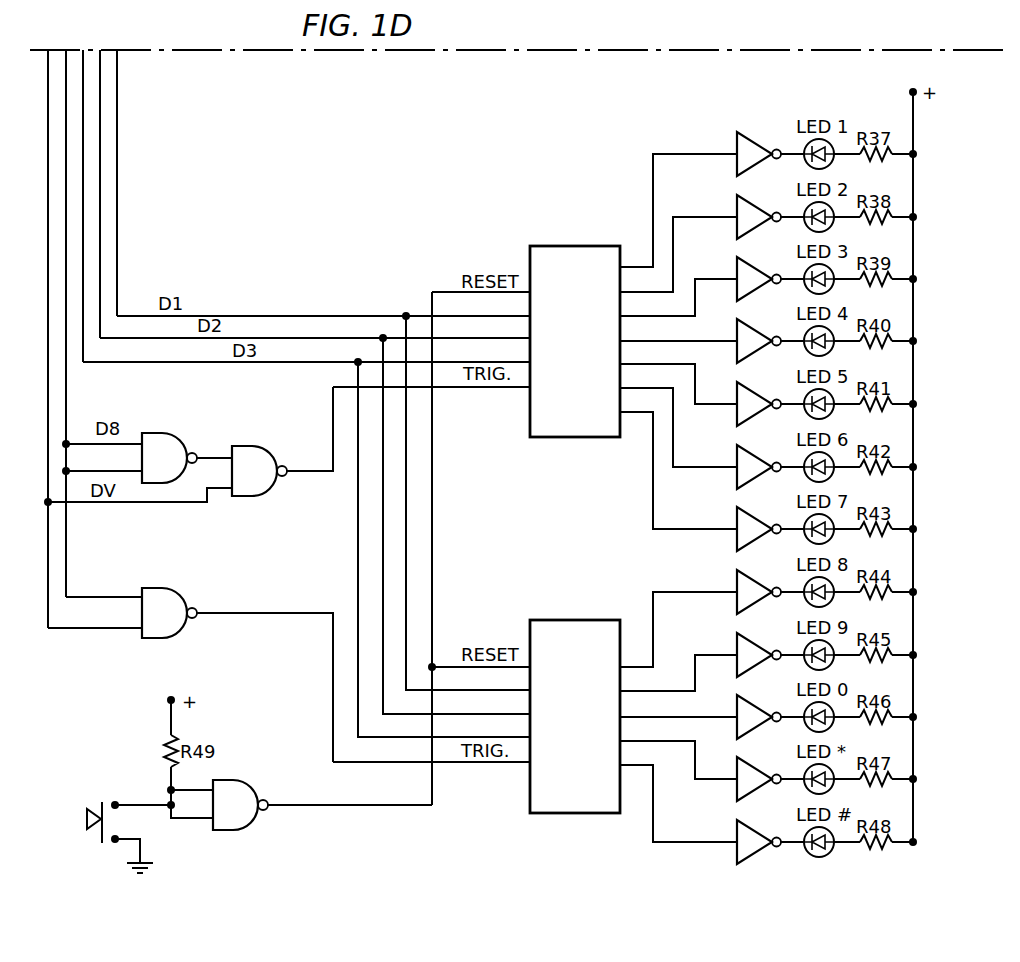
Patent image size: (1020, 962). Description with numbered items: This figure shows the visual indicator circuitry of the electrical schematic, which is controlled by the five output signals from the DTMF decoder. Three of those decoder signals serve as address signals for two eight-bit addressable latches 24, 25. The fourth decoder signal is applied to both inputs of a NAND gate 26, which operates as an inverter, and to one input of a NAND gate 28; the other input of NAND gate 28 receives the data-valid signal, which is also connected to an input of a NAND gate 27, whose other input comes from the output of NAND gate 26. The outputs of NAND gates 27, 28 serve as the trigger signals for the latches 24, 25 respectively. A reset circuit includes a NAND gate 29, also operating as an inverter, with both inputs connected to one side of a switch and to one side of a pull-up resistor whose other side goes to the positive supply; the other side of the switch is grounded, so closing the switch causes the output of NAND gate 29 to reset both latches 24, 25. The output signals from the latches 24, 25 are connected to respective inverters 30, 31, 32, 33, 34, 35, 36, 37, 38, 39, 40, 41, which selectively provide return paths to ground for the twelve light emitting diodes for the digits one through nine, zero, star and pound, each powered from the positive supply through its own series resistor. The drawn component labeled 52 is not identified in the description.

The addressable latch 24 is at (574, 246).
The addressable latch 25 is at (570, 813).
The NAND gate 26 is at (167, 433).
The NAND gate 27 is at (258, 446).
The NAND gate 28 is at (172, 638).
The NAND gate 29 is at (243, 830).
The inverter 30 is at (737, 144).
The inverter 31 is at (737, 207).
The inverter 32 is at (737, 271).
The inverter 33 is at (746, 322).
The inverter 34 is at (737, 396).
The inverter 35 is at (737, 459).
The inverter 36 is at (737, 521).
The inverter 37 is at (737, 584).
The inverter 38 is at (737, 648).
The inverter 39 is at (737, 710).
The inverter 40 is at (737, 773).
The inverter 41 is at (737, 834).
The phototransistor switch 52 is at (96, 835).